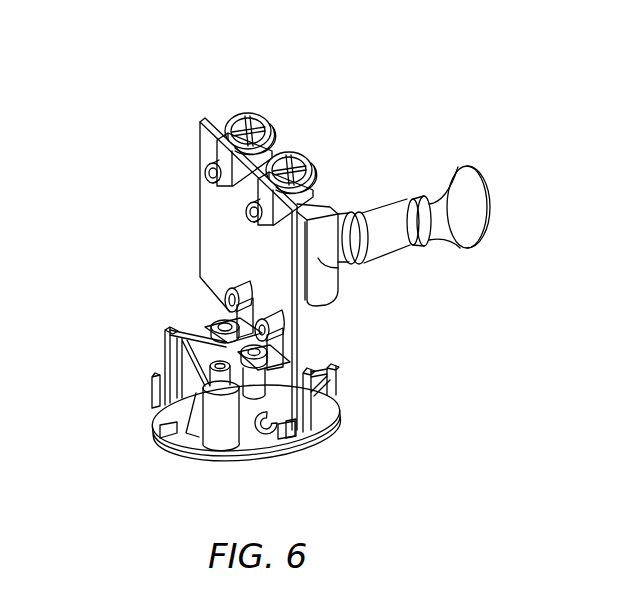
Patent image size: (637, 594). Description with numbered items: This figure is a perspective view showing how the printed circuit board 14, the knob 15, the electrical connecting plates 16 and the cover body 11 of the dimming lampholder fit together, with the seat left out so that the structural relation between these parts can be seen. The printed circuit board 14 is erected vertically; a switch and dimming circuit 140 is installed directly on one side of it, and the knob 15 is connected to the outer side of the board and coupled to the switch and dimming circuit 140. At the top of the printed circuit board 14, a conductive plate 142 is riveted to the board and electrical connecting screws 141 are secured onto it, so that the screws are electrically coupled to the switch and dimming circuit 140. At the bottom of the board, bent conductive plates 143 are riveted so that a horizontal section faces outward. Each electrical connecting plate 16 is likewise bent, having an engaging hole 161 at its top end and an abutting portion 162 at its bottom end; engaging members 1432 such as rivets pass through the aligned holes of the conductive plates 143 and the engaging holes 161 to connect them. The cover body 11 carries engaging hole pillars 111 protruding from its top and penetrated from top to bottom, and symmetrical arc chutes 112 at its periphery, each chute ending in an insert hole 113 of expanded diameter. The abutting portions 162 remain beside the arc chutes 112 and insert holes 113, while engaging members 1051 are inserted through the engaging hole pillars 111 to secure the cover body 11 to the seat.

The cover body 11 is at (327, 418).
The printed circuit board 14 is at (212, 225).
The knob 15 is at (445, 186).
The electrical connecting plate 16 is at (177, 335).
The engaging hole pillar 111 is at (212, 432).
The arc chute 112 is at (185, 388).
The insert hole 113 is at (268, 418).
The switch and dimming circuit 140 is at (315, 287).
The electrical connecting screw 141 is at (258, 118).
The conductive plate 142 is at (218, 147).
The conductive plate 143 is at (236, 285).
The engaging hole 161 is at (215, 378).
The abutting portion 162 is at (180, 363).
The engaging member 1051 is at (165, 408).
The engaging member 1432 is at (235, 325).